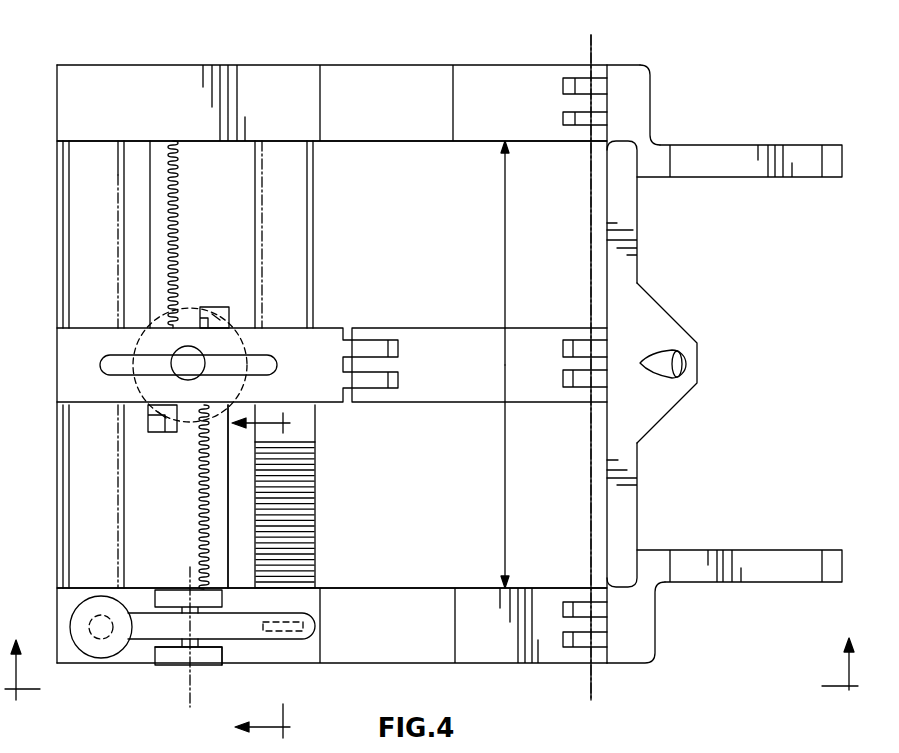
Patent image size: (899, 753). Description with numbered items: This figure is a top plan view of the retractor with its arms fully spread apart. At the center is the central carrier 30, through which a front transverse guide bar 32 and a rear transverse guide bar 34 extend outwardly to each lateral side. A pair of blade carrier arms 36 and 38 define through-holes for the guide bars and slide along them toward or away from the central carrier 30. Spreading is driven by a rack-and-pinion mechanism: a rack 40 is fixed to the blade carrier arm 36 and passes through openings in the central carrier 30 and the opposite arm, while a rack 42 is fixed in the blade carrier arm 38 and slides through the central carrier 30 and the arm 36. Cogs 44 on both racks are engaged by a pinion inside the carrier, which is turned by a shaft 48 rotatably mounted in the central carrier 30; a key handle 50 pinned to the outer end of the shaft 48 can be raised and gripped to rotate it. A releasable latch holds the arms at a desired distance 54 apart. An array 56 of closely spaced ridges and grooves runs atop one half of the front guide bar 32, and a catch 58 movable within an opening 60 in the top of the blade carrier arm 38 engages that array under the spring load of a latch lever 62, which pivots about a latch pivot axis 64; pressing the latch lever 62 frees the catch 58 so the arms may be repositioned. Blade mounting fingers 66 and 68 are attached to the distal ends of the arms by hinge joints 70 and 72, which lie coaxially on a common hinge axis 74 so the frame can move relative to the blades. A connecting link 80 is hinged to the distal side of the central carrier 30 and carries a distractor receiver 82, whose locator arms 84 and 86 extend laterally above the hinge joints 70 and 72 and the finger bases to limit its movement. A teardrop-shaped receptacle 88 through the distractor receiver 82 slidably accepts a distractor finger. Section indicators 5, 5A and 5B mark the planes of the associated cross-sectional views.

The central carrier 30 is at (325, 340).
The front transverse guide bar 32 is at (300, 224).
The rear transverse guide bar 34 is at (78, 237).
The blade carrier arm 36 is at (425, 593).
The blade carrier arm 38 is at (402, 75).
The rack 40 is at (217, 540).
The rack 42 is at (157, 184).
The cogs 44 is at (179, 213).
The shaft 48 is at (178, 380).
The key handle 50 is at (266, 382).
The distance 54 is at (505, 228).
The ridge-and-groove array 56 is at (317, 505).
The catch 58 is at (283, 640).
The opening 60 is at (305, 617).
The latch lever 62 is at (248, 636).
The latch pivot axis 64 is at (188, 692).
The blade mounting finger 66 is at (762, 555).
The blade mounting finger 68 is at (727, 153).
The hinge joint 70 is at (598, 656).
The hinge joint 72 is at (583, 78).
The hinge axis 74 is at (590, 482).
The connecting link 80 is at (458, 338).
The distractor receiver 82 is at (662, 327).
The locator arm 84 is at (624, 518).
The locator arm 86 is at (624, 204).
The receptacle 88 is at (687, 364).
The section line 5 is at (431, 684).
The section line 5A is at (282, 575).
The section detail 5B is at (188, 307).